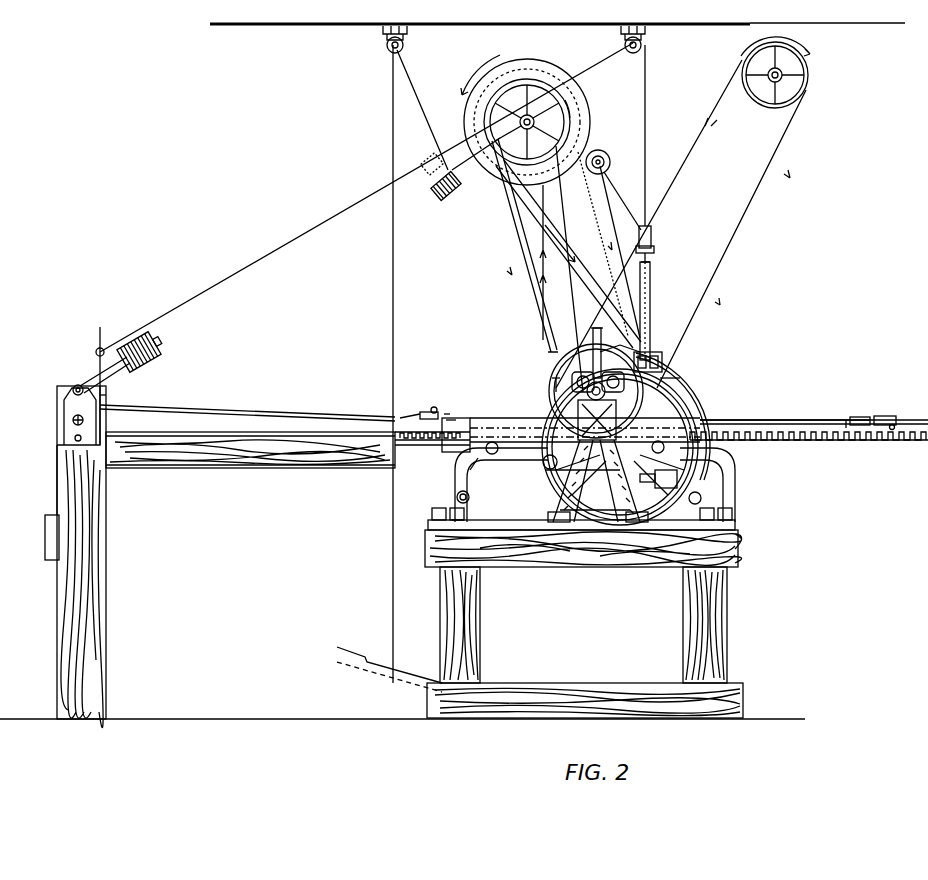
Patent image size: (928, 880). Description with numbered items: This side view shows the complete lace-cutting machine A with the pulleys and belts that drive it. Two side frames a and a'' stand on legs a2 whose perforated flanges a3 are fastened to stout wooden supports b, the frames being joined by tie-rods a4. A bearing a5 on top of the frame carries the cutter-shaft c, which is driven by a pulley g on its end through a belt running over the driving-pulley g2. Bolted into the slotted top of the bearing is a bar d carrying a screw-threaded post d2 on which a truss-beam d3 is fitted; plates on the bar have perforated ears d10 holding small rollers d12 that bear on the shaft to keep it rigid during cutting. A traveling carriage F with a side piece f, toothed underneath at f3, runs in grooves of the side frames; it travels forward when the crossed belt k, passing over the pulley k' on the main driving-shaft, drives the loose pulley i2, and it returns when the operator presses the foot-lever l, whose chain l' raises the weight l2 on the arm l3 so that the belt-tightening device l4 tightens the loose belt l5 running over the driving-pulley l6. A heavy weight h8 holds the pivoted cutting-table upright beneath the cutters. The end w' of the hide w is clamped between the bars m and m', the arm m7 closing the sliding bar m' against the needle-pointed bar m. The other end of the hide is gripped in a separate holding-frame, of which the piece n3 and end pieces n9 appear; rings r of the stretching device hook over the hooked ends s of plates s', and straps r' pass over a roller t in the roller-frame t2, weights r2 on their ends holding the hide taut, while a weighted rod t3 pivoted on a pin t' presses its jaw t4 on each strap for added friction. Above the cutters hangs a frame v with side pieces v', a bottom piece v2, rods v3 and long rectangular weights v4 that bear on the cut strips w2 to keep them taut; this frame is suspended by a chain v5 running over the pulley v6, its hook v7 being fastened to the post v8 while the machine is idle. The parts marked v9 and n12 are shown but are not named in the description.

The pulley v6 is at (643, 46).
The driving-pulley g2 is at (763, 108).
The pulley g is at (752, 165).
The driving-pulley l6 is at (545, 70).
The pulley k' is at (587, 101).
The belt-tightening device l4 is at (603, 150).
The chain or rope v5 is at (262, 248).
The chain l' is at (429, 364).
The foot-lever l is at (441, 438).
The frame v is at (634, 201).
The side pieces v' is at (647, 230).
The bottom piece v2 is at (654, 250).
The rods v3 is at (651, 268).
The rectangular weights v4 is at (651, 300).
The block v9 is at (650, 352).
The perforated lugs or ears d10 is at (640, 345).
The small rollers d12 is at (681, 378).
The crossed belt k is at (568, 254).
The loose belt l5 is at (512, 266).
The weight l2 is at (448, 198).
The arm l3 is at (460, 194).
The frame or bar d is at (576, 370).
The tie-rod or truss-beam d3 is at (593, 340).
The post d2 is at (556, 376).
The cutting-machine A is at (546, 411).
The bearing a5 is at (552, 384).
The cutter-shaft c is at (578, 406).
The side frame a'' is at (598, 517).
The side frame a is at (581, 449).
The heavy weight h8 is at (678, 478).
The loose pulley i2 is at (700, 406).
The supports or legs a2 is at (472, 478).
The perforated flanges a3 is at (464, 518).
The tie-rods a4 is at (459, 496).
The supports b is at (522, 560).
The traveling frame or carriage F is at (699, 442).
The side piece f is at (405, 445).
The teeth f3 is at (432, 446).
The slide block n12 is at (466, 416).
The bar or piece n3 is at (454, 416).
The end pieces n9 is at (446, 412).
The hooked ends s is at (429, 406).
The plates s' is at (440, 405).
The rings r is at (410, 408).
The narrow strips w2 is at (806, 420).
The end of hide w' is at (837, 412).
The bar m is at (860, 413).
The bar m' is at (885, 411).
The lever or arm m7 is at (893, 424).
The hide w is at (278, 557).
The belt or strap r' is at (247, 408).
The weights r2 is at (45, 540).
The roller-frame t2 is at (62, 402).
The wheel or roller t is at (101, 393).
The pin t' is at (75, 372).
The jaw t4 is at (106, 398).
The weighted rod t3 is at (162, 348).
The hook v7 is at (106, 378).
The post v8 is at (96, 353).